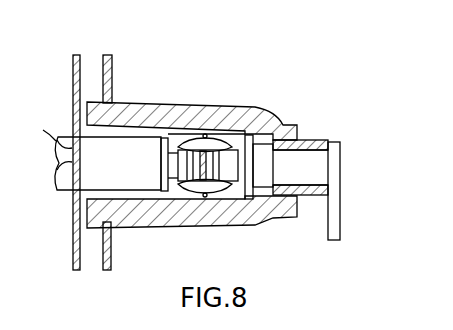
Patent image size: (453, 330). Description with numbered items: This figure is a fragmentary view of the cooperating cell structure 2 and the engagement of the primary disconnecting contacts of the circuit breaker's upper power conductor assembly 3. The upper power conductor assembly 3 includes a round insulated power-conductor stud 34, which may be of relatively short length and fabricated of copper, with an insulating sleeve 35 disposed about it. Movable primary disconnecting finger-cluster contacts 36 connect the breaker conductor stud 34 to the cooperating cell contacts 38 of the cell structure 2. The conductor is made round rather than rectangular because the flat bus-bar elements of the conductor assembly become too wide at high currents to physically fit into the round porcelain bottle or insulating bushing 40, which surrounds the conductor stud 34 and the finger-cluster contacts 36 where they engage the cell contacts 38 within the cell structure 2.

The cell structure 2 is at (368, 222).
The upper power conductor assembly 3 is at (43, 139).
The insulated power-conductor stud 34 is at (168, 164).
The insulating sleeve 35 is at (55, 167).
The movable primary disconnecting finger-cluster contacts 36 is at (237, 148).
The cell contacts 38 is at (246, 135).
The insulating bushing 40 is at (153, 92).